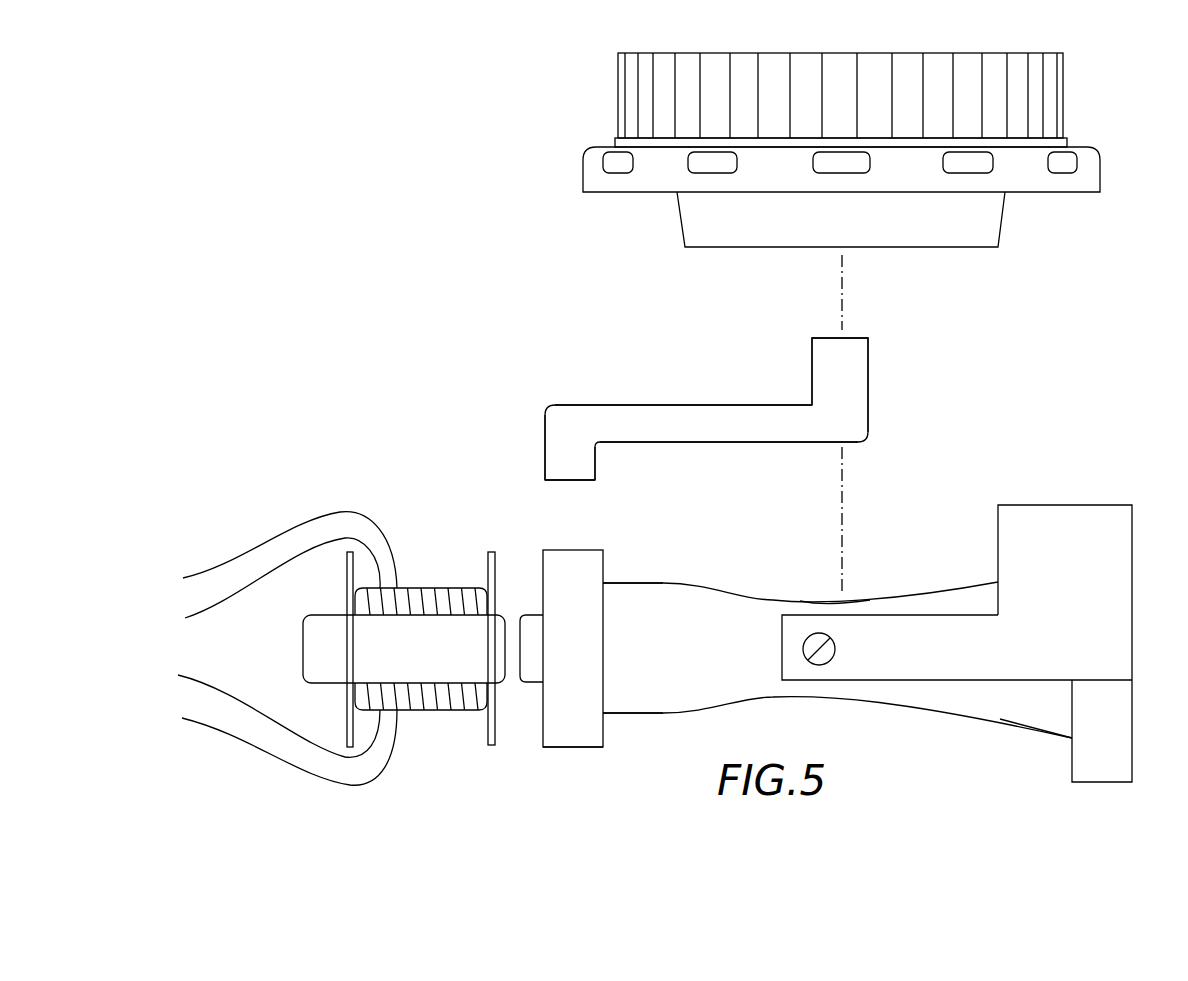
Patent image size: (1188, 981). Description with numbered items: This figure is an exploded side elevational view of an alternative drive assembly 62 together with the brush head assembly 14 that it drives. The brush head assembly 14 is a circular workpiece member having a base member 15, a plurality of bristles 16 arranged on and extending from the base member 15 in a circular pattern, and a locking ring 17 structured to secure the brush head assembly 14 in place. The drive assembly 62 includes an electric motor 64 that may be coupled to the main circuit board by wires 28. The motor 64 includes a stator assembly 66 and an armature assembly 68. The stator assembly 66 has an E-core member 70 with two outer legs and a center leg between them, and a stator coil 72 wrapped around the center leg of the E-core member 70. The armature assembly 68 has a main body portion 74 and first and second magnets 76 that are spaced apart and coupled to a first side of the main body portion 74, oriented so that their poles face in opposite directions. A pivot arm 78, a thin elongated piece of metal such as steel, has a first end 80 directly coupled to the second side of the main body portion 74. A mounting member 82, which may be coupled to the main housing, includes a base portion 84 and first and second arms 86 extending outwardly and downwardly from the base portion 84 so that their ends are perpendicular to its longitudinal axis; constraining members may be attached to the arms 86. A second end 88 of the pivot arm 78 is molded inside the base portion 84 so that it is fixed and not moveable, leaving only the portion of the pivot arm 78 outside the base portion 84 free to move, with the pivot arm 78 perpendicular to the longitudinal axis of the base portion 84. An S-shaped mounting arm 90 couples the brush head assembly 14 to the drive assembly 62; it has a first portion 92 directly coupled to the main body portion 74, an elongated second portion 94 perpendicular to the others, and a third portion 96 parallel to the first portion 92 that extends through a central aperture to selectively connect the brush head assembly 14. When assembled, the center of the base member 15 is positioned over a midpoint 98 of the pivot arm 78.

The brush head assembly 14 is at (1112, 125).
The base member 15 is at (995, 223).
The bristles 16 is at (968, 63).
The locking ring 17 is at (1088, 177).
The wires 28 is at (183, 578).
The drive assembly 62 is at (500, 408).
The electric motor 64 is at (508, 747).
The stator assembly 66 is at (408, 717).
The armature assembly 68 is at (585, 753).
The E-core member 70 is at (313, 648).
The stator coil 72 is at (422, 597).
The main body portion 74 is at (573, 555).
The magnets 76 is at (535, 622).
The pivot arm 78 is at (688, 595).
The first end 80 is at (612, 580).
The mounting member 82 is at (1062, 505).
The base portion 84 is at (1122, 708).
The arms 86 is at (895, 667).
The second end 88 is at (1067, 723).
The S-shaped mounting arm 90 is at (742, 402).
The first portion 92 is at (555, 452).
The second portion 94 is at (632, 412).
The third portion 96 is at (860, 368).
The midpoint 98 is at (847, 600).